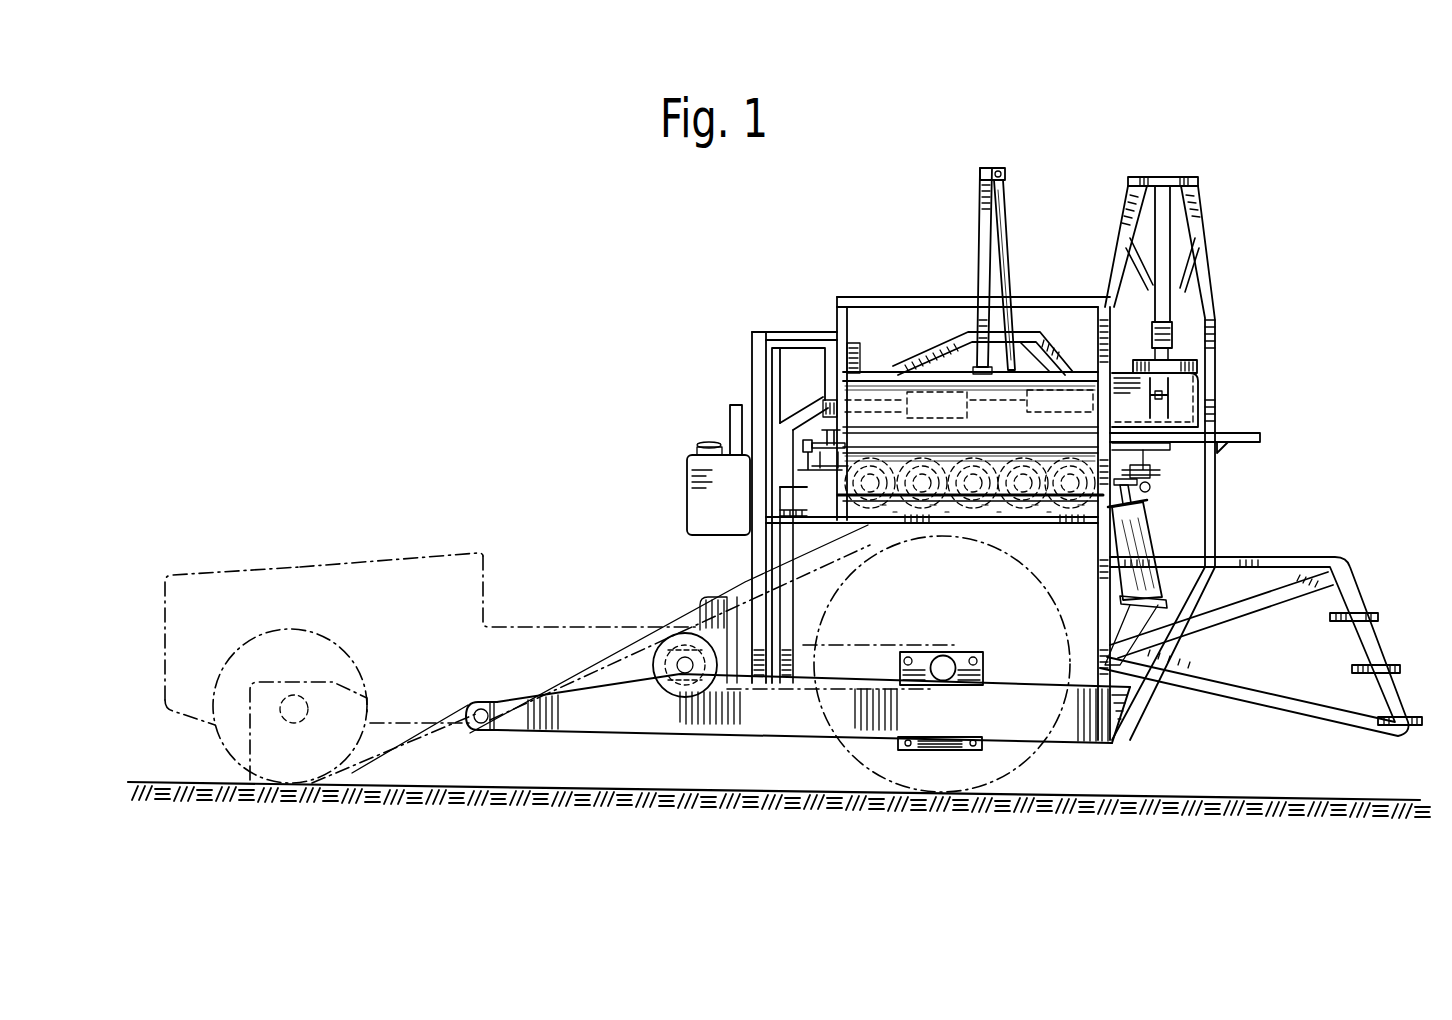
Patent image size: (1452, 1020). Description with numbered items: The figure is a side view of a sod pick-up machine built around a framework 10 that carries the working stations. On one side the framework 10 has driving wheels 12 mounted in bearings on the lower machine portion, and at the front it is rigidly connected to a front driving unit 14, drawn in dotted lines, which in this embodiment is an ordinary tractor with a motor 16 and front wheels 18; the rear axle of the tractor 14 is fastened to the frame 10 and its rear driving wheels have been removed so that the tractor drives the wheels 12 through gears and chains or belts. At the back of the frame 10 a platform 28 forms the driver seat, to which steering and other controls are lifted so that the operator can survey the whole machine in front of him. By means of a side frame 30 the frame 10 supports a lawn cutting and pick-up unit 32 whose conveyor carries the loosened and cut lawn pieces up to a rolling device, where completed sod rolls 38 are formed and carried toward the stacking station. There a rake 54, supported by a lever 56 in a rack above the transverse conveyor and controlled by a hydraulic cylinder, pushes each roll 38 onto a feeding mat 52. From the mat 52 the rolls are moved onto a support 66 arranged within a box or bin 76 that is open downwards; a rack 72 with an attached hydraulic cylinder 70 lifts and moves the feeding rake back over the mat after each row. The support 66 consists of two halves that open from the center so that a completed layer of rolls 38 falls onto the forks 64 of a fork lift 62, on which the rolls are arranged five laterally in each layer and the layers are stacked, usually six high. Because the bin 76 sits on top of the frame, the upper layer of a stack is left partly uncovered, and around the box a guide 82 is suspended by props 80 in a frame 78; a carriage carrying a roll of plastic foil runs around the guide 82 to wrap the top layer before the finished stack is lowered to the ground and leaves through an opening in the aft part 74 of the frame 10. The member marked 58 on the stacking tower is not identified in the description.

The framework 10 is at (667, 722).
The driving wheels 12 is at (843, 753).
The front driving unit 14 is at (432, 628).
The motor 16 is at (398, 565).
The front wheels 18 is at (222, 752).
The platform 28 is at (1273, 562).
The side frame 30 is at (927, 353).
The lawn cutting and pick-up unit 32 is at (640, 606).
The sod rolls 38 is at (857, 528).
The feeding mat 52 is at (1210, 406).
The rake 54 is at (1173, 367).
The lever 56 is at (1160, 312).
The mast 58 is at (1197, 232).
The fork lift 62 is at (760, 378).
The forks 64 is at (1031, 520).
The support 66 is at (887, 437).
The hydraulic cylinder 70 is at (993, 213).
The rack 72 is at (985, 208).
The aft part 74 is at (1108, 690).
The box or bin 76 is at (832, 447).
The frame 78 is at (827, 433).
The props 80 is at (813, 453).
The guide 82 is at (803, 483).